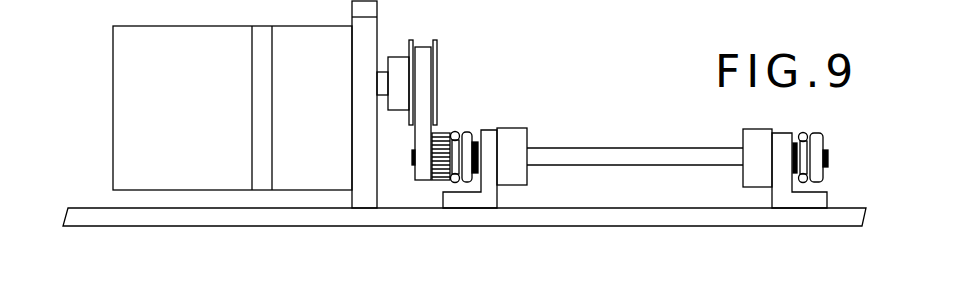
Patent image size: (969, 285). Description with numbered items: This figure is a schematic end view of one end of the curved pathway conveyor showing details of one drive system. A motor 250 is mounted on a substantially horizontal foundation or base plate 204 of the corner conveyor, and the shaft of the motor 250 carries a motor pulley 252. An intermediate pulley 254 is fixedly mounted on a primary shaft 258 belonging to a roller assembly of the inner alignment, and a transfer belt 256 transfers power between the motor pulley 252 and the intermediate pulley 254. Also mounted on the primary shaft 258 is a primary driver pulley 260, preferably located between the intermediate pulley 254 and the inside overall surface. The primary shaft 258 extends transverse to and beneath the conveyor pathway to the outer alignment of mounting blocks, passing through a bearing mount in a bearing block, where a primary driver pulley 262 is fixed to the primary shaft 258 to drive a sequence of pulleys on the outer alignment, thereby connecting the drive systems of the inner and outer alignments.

The base plate 204 is at (96, 207).
The motor 250 is at (192, 132).
The motor pulley 252 is at (438, 46).
The transfer belt 256 is at (427, 81).
The intermediate pulley 254 is at (442, 131).
The primary driver pulley 260 is at (456, 133).
The primary shaft 258 is at (600, 148).
The primary driver pulley 262 is at (809, 133).